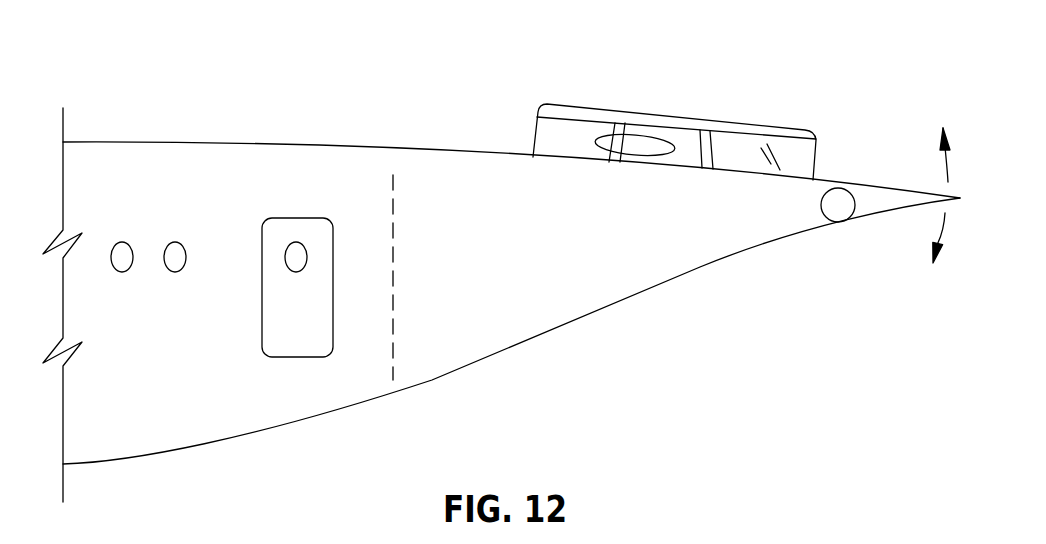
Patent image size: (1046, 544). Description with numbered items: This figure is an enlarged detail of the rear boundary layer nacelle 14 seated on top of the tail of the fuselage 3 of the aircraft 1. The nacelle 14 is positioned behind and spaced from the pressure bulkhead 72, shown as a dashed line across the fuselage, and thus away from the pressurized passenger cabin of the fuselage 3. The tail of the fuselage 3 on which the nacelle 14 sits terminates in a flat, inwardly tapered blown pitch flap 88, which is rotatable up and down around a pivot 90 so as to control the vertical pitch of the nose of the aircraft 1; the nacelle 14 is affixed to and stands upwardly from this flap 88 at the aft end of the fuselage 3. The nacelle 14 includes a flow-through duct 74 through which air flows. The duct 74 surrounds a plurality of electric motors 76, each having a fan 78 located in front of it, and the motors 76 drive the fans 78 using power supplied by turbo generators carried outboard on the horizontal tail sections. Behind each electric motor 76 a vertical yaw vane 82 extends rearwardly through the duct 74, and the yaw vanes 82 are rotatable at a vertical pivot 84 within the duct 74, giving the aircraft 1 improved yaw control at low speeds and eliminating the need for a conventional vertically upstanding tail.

The aircraft 1 is at (137, 109).
The fuselage 3 is at (227, 142).
The rear boundary layer nacelle 14 is at (772, 95).
The pressure bulkhead 72 is at (395, 290).
The flow-through duct 74 is at (675, 117).
The electric motor 76 is at (635, 162).
The fan 78 is at (620, 122).
The vertical yaw vane 82 is at (778, 155).
The vertical pivot 84 is at (712, 167).
The blown pitch flap 88 is at (878, 185).
The pivot 90 is at (845, 222).